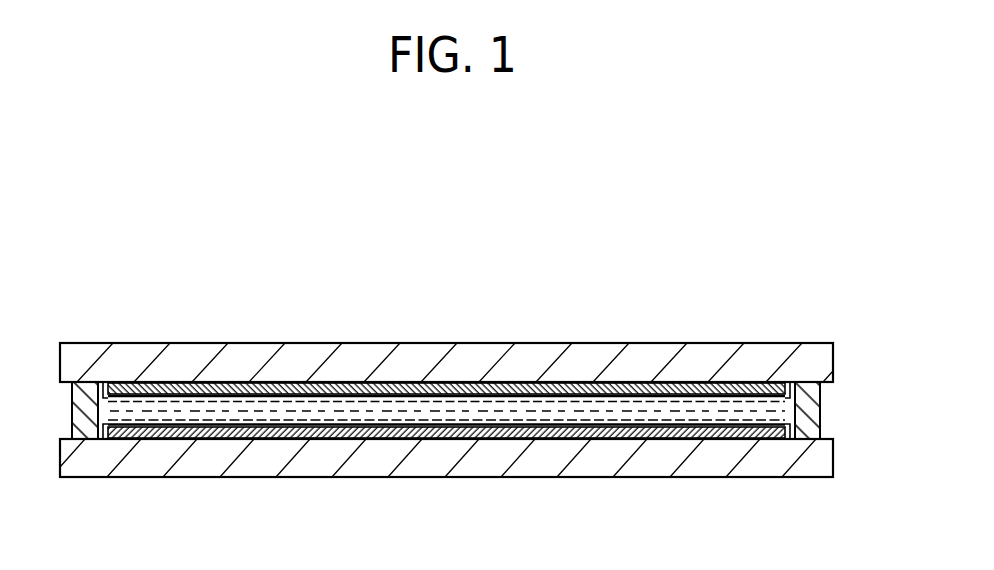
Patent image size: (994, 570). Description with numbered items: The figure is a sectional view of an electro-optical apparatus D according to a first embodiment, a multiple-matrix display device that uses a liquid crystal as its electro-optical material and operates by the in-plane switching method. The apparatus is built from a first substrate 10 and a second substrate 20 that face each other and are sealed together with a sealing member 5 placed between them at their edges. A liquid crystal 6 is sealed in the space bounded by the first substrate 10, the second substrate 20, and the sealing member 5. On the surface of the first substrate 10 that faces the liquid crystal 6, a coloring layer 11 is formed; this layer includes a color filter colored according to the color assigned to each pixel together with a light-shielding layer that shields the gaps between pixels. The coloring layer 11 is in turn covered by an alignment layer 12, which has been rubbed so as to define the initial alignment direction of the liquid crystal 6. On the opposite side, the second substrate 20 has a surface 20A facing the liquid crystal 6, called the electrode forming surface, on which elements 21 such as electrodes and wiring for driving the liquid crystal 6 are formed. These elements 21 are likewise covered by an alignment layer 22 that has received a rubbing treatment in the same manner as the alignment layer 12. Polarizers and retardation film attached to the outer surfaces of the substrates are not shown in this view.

The electro-optical apparatus D is at (662, 297).
The first substrate 10 is at (833, 358).
The second substrate 20 is at (827, 460).
The sealing member 5 is at (72, 403).
The liquid crystal 6 is at (820, 410).
The coloring layer 11 is at (483, 382).
The alignment layer 12 is at (541, 393).
The elements 21 is at (413, 440).
The alignment layer 22 is at (472, 440).
The electrode forming surface 20A is at (538, 424).